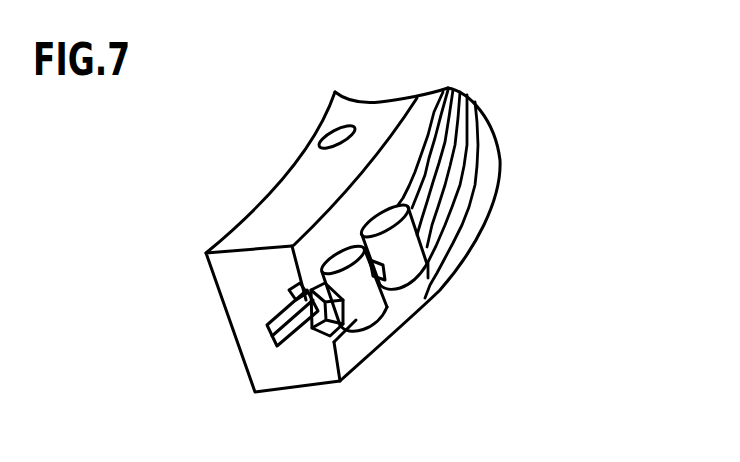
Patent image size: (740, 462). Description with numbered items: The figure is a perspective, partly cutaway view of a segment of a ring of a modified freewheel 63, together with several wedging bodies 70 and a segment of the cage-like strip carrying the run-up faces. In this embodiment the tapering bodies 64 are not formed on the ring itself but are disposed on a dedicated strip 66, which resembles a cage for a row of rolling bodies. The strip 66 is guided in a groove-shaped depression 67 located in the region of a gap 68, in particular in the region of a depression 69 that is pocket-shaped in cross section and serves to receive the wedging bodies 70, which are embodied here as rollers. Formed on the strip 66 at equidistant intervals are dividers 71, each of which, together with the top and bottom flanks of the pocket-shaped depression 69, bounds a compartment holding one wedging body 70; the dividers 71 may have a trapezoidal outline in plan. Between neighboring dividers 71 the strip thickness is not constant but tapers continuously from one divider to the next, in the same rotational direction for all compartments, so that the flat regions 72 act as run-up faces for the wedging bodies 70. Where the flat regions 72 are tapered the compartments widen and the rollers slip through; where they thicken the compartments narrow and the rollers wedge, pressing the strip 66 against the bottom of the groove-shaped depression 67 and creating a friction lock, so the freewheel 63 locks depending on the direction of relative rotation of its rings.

The freewheel 63 is at (476, 280).
The tapering bodies 64 is at (291, 328).
The strip 66 is at (272, 338).
The groove-shaped depression 67 is at (433, 167).
The gap 68 is at (466, 214).
The pocket-shaped depression 69 is at (472, 117).
The wedging bodies 70 is at (370, 310).
The dividers 71 is at (295, 244).
The flat regions 72 is at (271, 318).